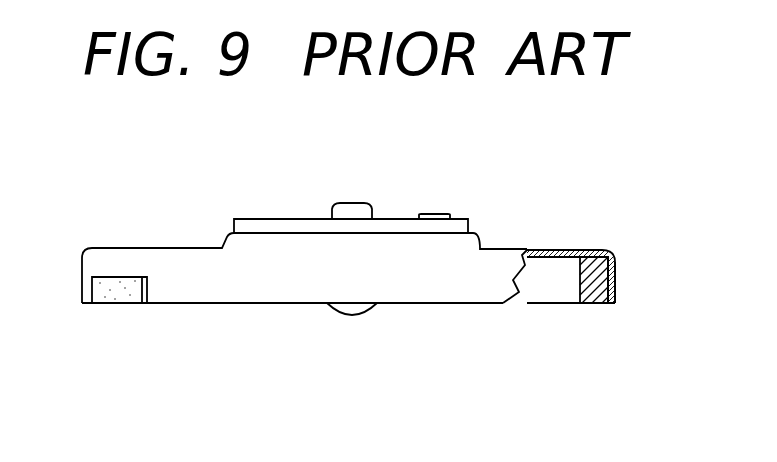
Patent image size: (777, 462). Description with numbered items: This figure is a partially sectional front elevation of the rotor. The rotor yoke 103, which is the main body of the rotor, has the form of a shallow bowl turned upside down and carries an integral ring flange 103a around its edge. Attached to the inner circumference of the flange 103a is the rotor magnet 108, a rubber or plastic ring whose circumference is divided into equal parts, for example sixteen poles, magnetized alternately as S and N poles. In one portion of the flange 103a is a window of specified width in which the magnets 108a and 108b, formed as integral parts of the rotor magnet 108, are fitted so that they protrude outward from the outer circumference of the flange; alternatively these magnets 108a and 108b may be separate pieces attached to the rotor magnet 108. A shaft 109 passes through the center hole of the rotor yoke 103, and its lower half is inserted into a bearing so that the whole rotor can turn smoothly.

The rotor yoke 103 is at (557, 249).
The ring flange 103a is at (616, 273).
The rotor magnet 108 is at (598, 306).
The magnet 108a is at (108, 277).
The magnet 108b is at (142, 290).
The shaft 109 is at (353, 205).